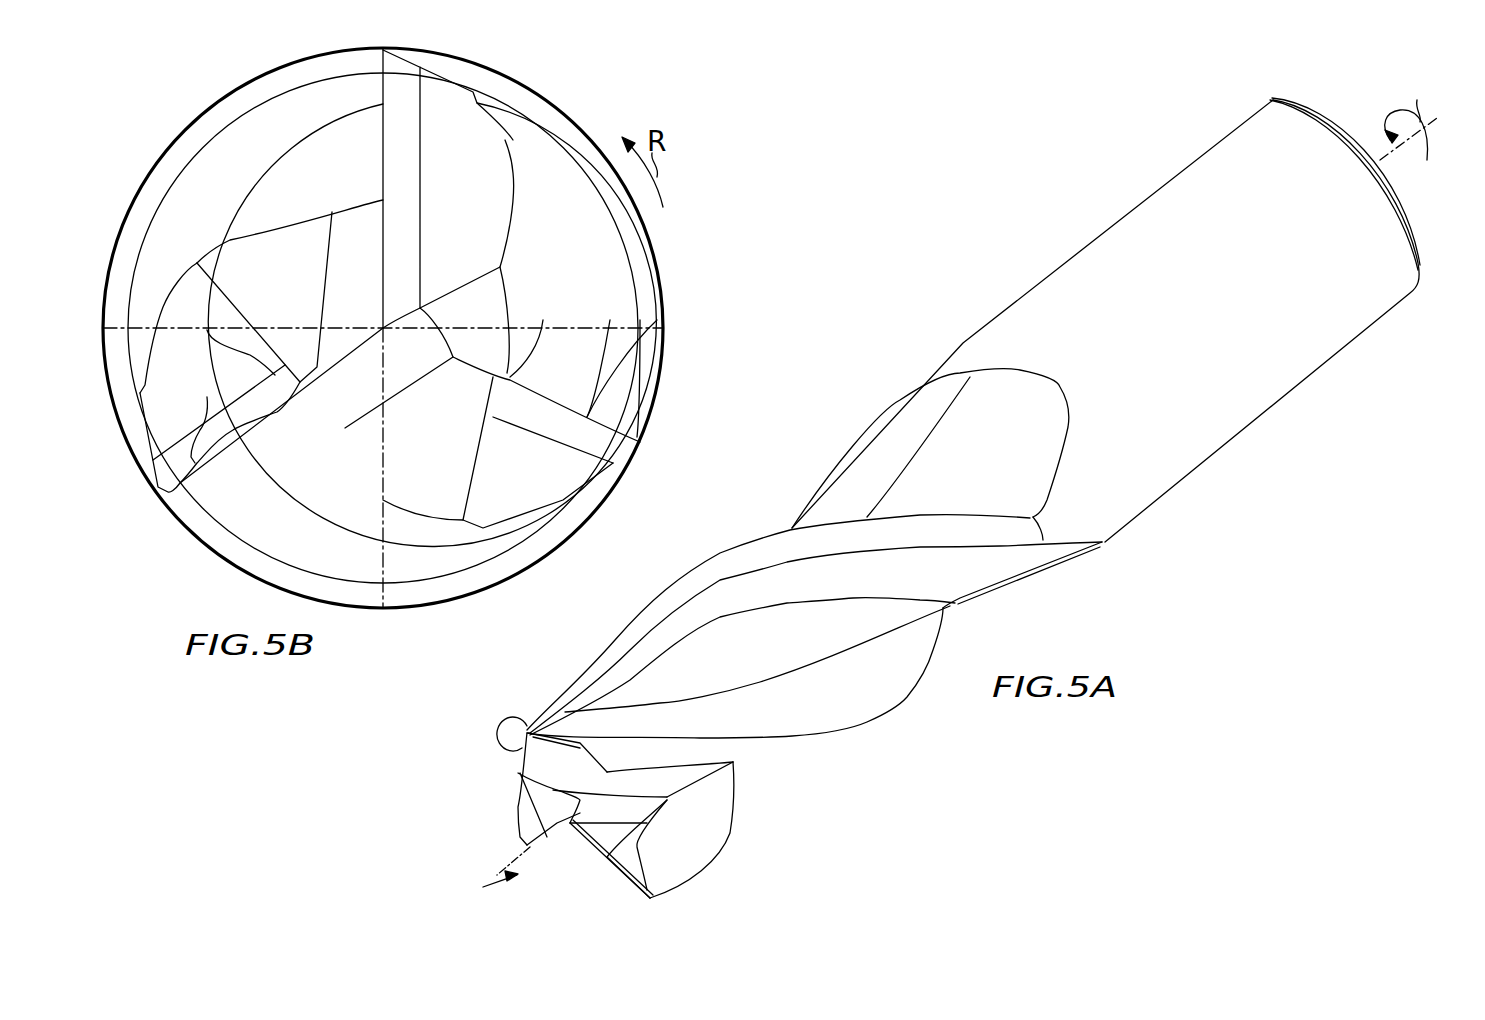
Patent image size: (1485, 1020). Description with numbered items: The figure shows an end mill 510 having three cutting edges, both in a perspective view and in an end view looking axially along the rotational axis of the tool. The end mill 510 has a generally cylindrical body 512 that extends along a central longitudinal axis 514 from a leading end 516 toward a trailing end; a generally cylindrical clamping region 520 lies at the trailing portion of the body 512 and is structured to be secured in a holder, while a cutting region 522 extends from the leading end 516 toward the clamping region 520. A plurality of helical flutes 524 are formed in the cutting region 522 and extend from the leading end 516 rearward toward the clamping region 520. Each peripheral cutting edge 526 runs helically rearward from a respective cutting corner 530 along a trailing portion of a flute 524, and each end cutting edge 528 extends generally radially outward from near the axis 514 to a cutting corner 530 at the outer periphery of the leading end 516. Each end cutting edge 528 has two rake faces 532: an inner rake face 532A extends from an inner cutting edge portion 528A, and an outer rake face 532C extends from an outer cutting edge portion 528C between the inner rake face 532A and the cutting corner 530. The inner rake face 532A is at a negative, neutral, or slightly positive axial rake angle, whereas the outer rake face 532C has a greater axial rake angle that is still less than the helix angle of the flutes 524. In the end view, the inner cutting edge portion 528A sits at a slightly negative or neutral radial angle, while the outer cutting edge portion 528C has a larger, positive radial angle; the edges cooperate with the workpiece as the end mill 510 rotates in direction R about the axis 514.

In FIG. 5B, the end mill 510 is at (600, 105).
In FIG. 5A, the end mill 510 is at (935, 290).
In FIG. 5A, the body 512 is at (1225, 418).
In FIG. 5B, the central longitudinal axis 514 is at (380, 326).
In FIG. 5A, the central longitudinal axis 514 is at (505, 857).
In FIG. 5A, the leading end 516 is at (483, 887).
In FIG. 5A, the clamping region 520 is at (1072, 197).
In FIG. 5A, the cutting region 522 is at (818, 762).
In FIG. 5A, the flutes 524 is at (790, 505).
In FIG. 5A, the peripheral cutting edges 526 is at (725, 550).
In FIG. 5B, the end cutting edges 528 is at (313, 127).
In FIG. 5A, the end cutting edges 528 is at (530, 750).
In FIG. 5B, the inner cutting edge portion 528A is at (383, 222).
In FIG. 5A, the inner cutting edge portion 528A is at (567, 837).
In FIG. 5B, the outer cutting edge portion 528C is at (383, 117).
In FIG. 5A, the outer cutting edge portion 528C is at (630, 880).
In FIG. 5A, the cutting corner 530 is at (527, 730).
In FIG. 5B, the rake faces 532 is at (322, 407).
In FIG. 5A, the rake faces 532 is at (727, 793).
In FIG. 5A, the inner rake face 532A is at (640, 833).
In FIG. 5A, the outer rake face 532C is at (625, 860).